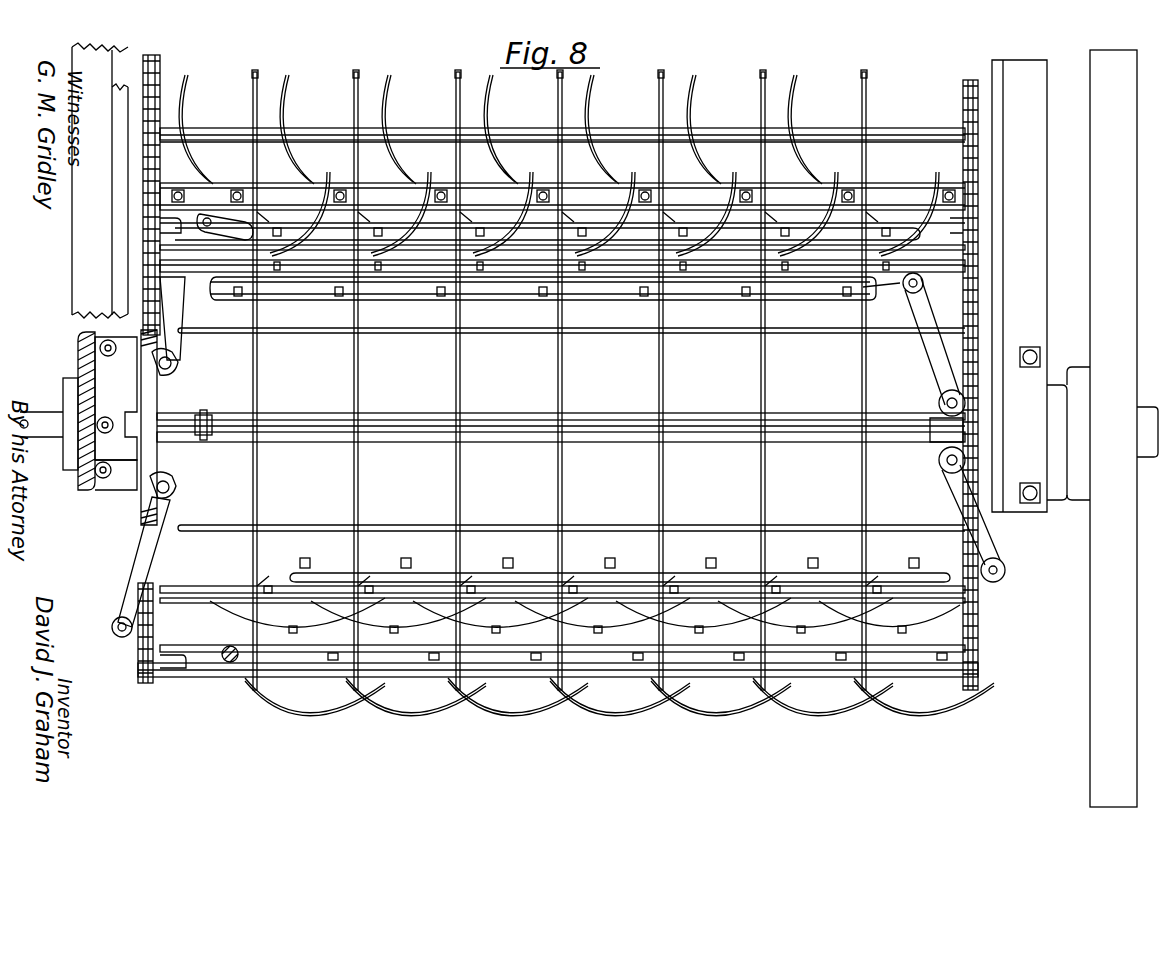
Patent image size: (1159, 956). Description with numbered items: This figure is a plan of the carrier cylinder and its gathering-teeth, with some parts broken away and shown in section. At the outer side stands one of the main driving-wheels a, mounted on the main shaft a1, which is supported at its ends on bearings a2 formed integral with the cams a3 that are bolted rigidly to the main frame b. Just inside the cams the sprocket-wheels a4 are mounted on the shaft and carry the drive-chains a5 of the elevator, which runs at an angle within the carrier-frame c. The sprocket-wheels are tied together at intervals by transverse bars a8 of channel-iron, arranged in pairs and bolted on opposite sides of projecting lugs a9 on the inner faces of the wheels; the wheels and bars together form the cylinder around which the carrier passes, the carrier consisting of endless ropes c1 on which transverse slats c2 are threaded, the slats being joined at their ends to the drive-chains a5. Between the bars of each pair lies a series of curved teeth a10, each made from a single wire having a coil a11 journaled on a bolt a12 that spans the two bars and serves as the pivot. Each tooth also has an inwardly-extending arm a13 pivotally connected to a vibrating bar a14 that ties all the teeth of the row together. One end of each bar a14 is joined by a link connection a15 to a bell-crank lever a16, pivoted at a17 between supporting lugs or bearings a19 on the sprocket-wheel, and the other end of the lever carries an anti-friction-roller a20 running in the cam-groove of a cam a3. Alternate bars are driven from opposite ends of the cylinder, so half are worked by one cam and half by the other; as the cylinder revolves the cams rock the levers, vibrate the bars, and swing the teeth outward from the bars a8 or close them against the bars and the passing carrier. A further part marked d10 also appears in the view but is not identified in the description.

The main driving-wheels a is at (1124, 428).
The main shaft a1 is at (37, 410).
The bearings a2 is at (63, 468).
The cams a3 is at (90, 492).
The sprocket-wheels a4 is at (136, 650).
The drive-chains a5 is at (163, 64).
The transverse bars a8 is at (489, 190).
The projecting lugs a9 is at (175, 254).
The curved teeth a10 is at (594, 116).
The coil a11 is at (228, 672).
The bolt a12 is at (648, 190).
The inwardly-extending arm a13 is at (720, 222).
The vibrating bar a14 is at (706, 684).
The link connection a15 is at (236, 222).
The bell-crank lever a16 is at (190, 305).
The pivot a17 is at (172, 362).
The supporting lugs or bearings a19 is at (170, 398).
The anti-friction-rollers a20 is at (109, 358).
The main frame b is at (587, 366).
The carrier-frame c is at (112, 168).
The endless ropes c1 is at (352, 358).
The transverse slats c2 is at (525, 137).
The upper rod d10 is at (446, 137).